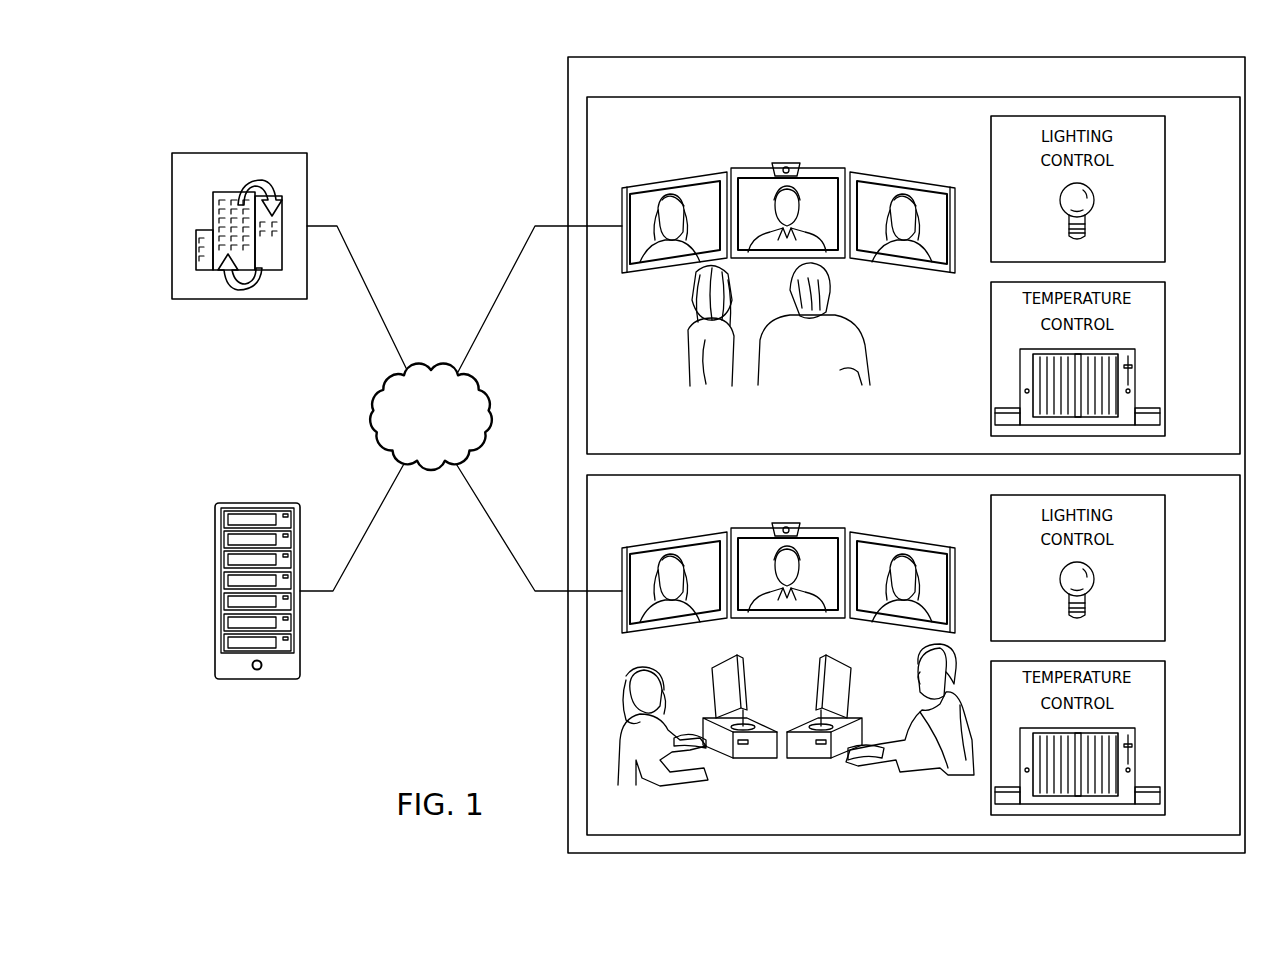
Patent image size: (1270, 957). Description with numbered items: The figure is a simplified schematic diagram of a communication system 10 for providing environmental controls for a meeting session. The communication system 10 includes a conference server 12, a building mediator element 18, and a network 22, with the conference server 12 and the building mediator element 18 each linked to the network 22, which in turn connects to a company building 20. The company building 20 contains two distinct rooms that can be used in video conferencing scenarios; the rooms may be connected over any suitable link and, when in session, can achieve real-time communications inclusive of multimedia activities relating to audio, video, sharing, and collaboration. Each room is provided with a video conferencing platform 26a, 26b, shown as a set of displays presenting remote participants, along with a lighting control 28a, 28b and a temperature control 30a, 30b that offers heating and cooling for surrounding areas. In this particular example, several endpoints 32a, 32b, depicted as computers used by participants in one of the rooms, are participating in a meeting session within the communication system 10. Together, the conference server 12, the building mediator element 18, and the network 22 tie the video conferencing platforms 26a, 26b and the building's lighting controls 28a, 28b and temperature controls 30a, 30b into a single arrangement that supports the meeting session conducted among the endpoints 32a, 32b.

The communication system 10 is at (404, 118).
The conference server 12 is at (257, 680).
The building mediator element 18 is at (240, 153).
The company building 20 is at (562, 162).
The network 22 is at (373, 414).
The video conferencing platform 26a is at (714, 160).
The video conferencing platform 26b is at (668, 530).
The lighting control 28a is at (1165, 187).
The lighting control 28b is at (1165, 568).
The temperature control 30a is at (1165, 364).
The temperature control 30b is at (1165, 744).
The endpoint 32a is at (755, 760).
The endpoint 32b is at (810, 760).